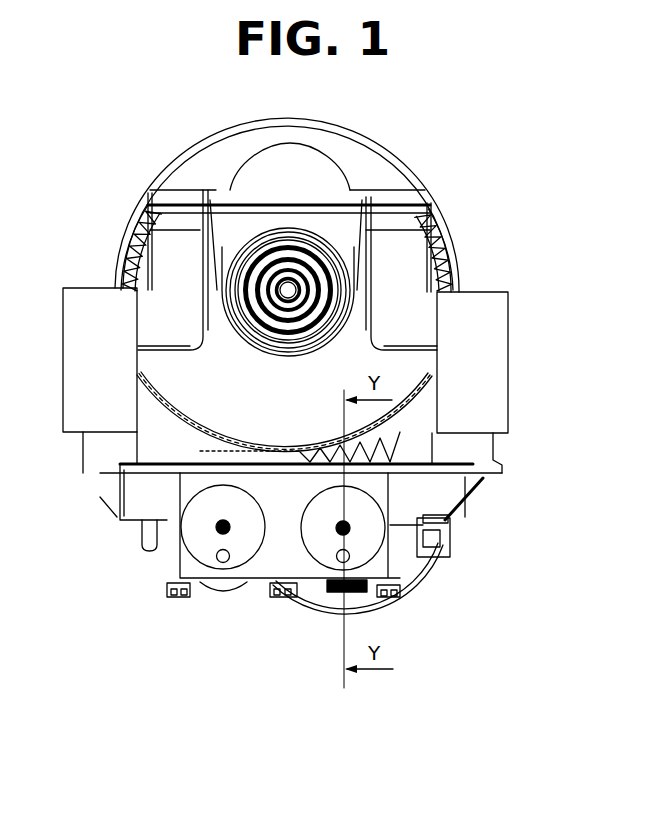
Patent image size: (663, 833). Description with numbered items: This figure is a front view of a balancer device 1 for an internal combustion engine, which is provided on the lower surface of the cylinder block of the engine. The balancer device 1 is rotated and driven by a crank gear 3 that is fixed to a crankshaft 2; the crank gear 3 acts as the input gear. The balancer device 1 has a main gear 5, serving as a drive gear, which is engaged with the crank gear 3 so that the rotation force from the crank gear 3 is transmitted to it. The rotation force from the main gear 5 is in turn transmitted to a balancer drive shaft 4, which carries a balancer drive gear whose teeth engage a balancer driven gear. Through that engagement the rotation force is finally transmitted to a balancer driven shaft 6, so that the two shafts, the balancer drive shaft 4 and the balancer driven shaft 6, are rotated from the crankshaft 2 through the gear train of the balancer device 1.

The balancer device 1 is at (393, 503).
The crankshaft 2 is at (253, 247).
The crank gear 3 is at (452, 240).
The balancer drive shaft 4 is at (357, 538).
The main gear 5 is at (357, 458).
The balancer driven shaft 6 is at (197, 532).